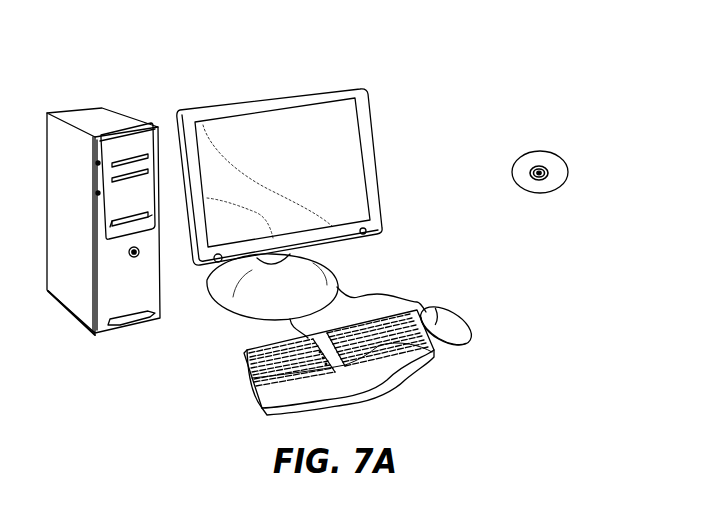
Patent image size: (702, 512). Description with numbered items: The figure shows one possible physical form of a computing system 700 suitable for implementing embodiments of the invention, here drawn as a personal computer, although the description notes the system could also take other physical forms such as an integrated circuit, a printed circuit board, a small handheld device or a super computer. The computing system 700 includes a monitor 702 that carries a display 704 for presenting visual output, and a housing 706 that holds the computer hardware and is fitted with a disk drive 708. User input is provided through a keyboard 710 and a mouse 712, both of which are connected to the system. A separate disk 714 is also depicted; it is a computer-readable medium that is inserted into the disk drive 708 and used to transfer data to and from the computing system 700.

The computing system 700 is at (472, 78).
The monitor 702 is at (377, 178).
The display 704 is at (337, 123).
The housing 706 is at (92, 115).
The disk drive 708 is at (147, 218).
The keyboard 710 is at (247, 385).
The mouse 712 is at (466, 320).
The disk 714 is at (556, 152).